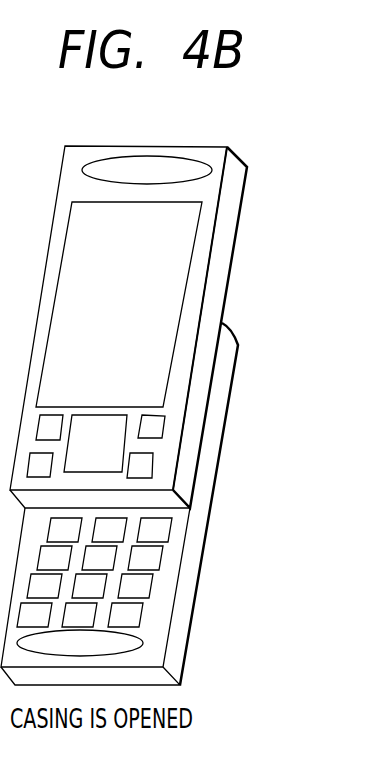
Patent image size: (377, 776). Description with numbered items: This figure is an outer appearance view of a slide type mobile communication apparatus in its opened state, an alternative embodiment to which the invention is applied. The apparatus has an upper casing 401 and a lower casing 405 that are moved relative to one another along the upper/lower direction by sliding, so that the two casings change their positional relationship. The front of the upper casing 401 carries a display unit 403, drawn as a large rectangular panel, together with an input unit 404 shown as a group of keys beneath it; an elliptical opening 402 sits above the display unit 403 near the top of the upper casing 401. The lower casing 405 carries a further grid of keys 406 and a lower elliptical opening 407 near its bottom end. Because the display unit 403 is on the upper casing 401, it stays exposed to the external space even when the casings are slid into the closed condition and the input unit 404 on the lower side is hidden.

The upper casing 401 is at (239, 150).
The speaker 402 is at (195, 184).
The display unit 403 is at (187, 305).
The input unit 404 is at (127, 445).
The lower casing 405 is at (214, 513).
The keypad / operation keys 406 is at (112, 514).
The microphone 407 is at (150, 643).